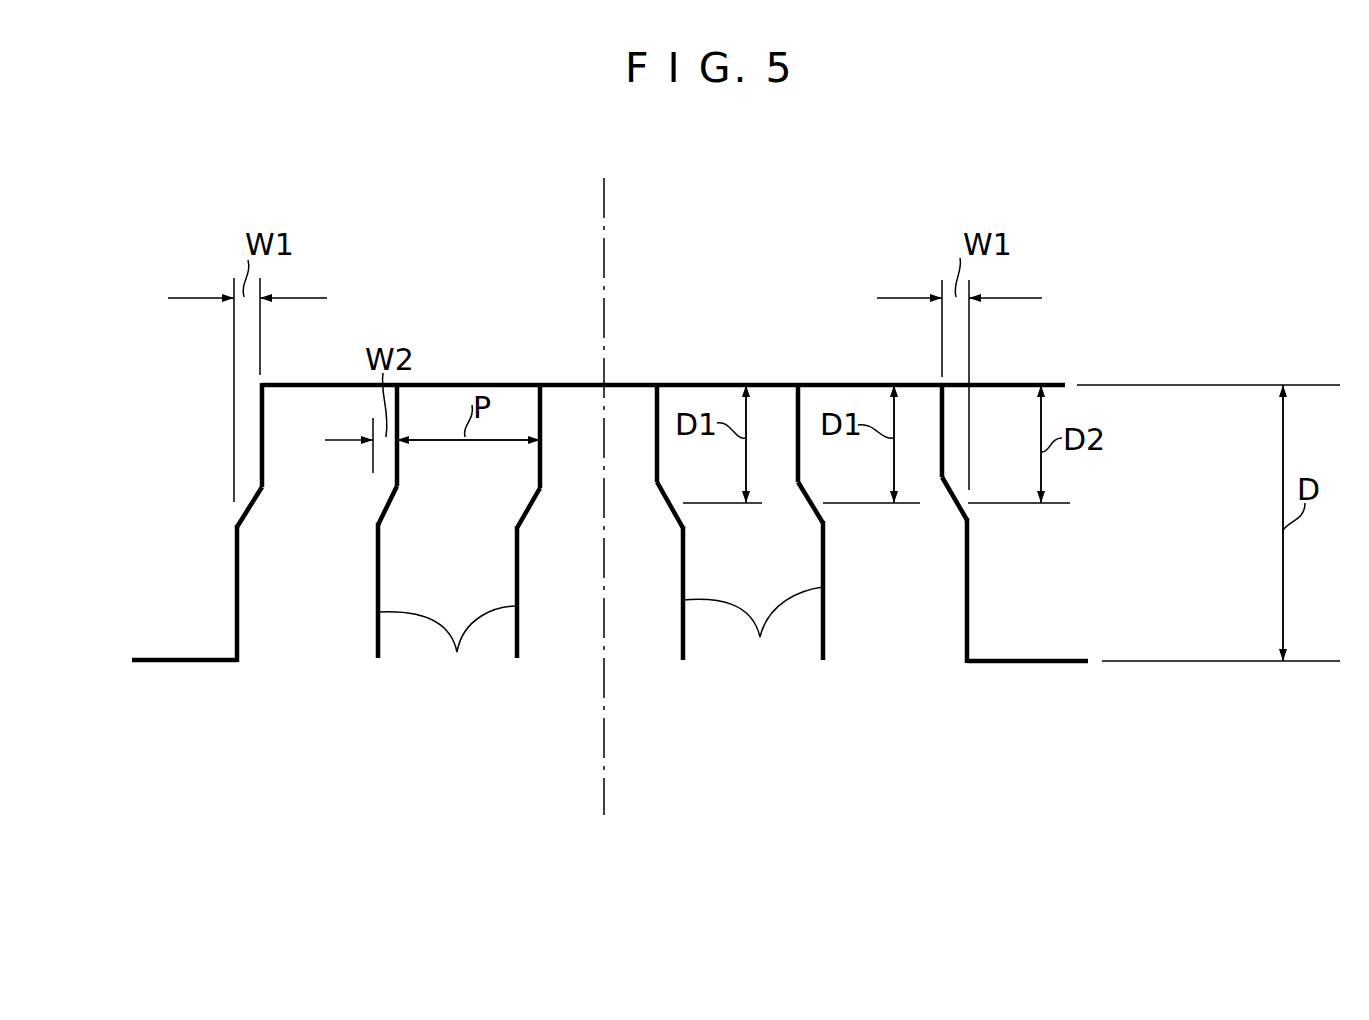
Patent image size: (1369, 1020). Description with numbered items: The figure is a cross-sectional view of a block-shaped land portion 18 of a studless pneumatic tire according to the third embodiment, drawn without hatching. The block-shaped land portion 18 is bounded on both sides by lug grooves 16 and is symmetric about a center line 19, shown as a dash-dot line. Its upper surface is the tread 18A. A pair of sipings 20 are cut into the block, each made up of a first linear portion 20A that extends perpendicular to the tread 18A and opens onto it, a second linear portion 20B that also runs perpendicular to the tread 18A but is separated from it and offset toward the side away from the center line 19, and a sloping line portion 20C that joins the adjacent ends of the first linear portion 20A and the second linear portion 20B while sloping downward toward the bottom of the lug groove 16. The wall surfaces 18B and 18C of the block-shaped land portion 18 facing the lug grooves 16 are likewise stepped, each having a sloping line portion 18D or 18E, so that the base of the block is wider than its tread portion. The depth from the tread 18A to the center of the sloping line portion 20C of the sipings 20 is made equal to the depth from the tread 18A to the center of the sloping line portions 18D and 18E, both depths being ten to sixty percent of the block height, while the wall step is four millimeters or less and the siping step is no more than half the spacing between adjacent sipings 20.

The lug groove 16 is at (178, 658).
The block-shaped land portion 18 is at (602, 478).
The tread 18A is at (460, 385).
The wall surface 18B is at (970, 563).
The wall surface 18C is at (235, 573).
The sloping line portion 18D is at (970, 497).
The sloping line portion 18E is at (240, 513).
The center line 19 is at (604, 223).
The siping 20 is at (624, 509).
The first linear portion 20A is at (541, 407).
The second linear portion 20B is at (503, 578).
The sloping line portion 20C is at (393, 492).